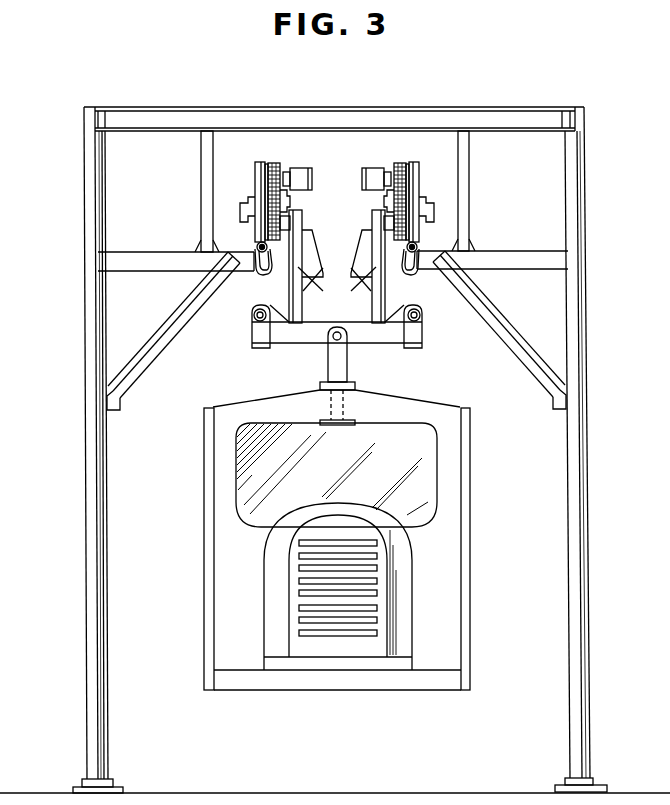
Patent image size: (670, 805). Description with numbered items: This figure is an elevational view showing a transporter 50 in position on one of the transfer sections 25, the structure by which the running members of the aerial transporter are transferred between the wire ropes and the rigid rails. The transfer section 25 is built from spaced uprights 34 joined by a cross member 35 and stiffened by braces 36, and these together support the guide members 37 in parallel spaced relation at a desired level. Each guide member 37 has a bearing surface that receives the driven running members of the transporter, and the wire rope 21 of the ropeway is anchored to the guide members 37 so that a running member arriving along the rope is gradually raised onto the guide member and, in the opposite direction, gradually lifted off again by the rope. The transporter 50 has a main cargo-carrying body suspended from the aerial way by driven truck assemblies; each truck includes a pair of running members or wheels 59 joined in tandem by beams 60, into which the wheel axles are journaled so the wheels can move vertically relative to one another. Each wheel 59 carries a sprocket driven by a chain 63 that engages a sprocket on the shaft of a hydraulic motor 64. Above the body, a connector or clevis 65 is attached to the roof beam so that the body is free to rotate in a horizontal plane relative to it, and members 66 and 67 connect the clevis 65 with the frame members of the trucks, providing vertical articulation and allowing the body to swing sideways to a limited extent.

The transfer section 25 is at (76, 206).
The cross member 35 is at (300, 115).
The uprights 34 is at (93, 562).
The braces 36 is at (200, 176).
The running members or wheels 59 is at (257, 187).
The chain 63 is at (279, 163).
The beams 60 is at (252, 202).
The hydraulic motor 64 is at (337, 179).
The wire rope 21 is at (259, 246).
The guide member 37 is at (276, 272).
The connecting member 67 is at (375, 260).
The connecting member 66 is at (257, 338).
The connector or clevis 65 is at (336, 362).
The transporter 50 is at (200, 480).